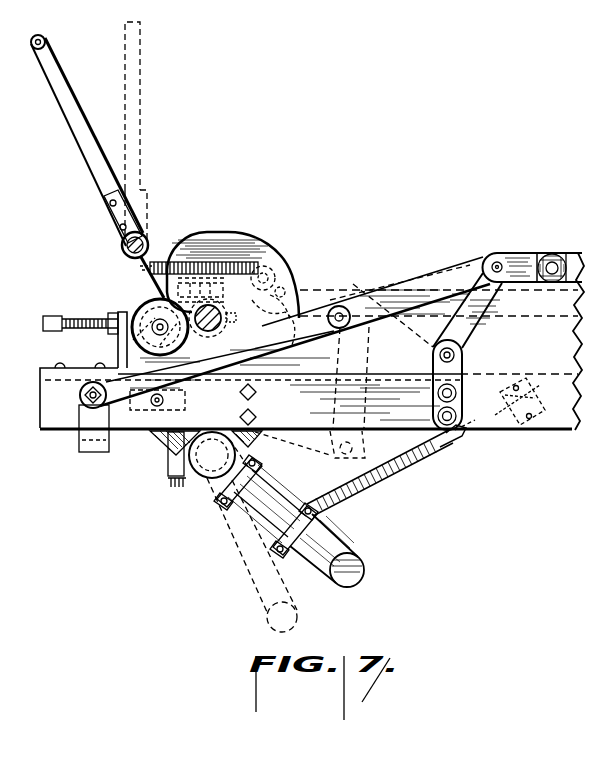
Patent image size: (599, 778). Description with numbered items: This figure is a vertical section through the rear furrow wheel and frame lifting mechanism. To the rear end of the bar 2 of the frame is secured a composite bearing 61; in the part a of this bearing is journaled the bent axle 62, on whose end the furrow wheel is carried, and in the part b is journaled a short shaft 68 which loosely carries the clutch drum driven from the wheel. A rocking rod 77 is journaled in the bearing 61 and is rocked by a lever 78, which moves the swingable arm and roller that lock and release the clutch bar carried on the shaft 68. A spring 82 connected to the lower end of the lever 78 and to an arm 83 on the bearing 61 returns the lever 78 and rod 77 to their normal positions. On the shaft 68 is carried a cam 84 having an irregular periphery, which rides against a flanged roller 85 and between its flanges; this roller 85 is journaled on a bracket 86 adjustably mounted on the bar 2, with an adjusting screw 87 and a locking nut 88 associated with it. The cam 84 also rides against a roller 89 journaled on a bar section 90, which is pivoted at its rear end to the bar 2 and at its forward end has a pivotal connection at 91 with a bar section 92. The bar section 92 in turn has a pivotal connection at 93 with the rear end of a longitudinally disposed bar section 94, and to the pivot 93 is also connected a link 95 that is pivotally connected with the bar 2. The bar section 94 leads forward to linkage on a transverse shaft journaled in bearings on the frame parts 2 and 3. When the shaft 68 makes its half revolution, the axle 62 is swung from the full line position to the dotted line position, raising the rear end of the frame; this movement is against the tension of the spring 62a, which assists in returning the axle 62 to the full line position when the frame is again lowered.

The lever 78 is at (50, 63).
The rocking rod 77 is at (121, 242).
The part b of the bearing b is at (154, 244).
The short shaft 68 is at (212, 303).
The spring 82 is at (185, 265).
The arm 83 is at (267, 277).
The cam 84 is at (283, 291).
The roller 85 is at (146, 306).
The adjusting screw 87 is at (56, 332).
The locking nut 88 is at (114, 334).
The bar of the frame 2 is at (62, 418).
The bracket 86 is at (147, 411).
The composite bearing 61 is at (175, 436).
The bar section 90 is at (295, 345).
The roller 89 is at (260, 386).
The pivotal connection 91 is at (343, 311).
The bar section 92 is at (420, 273).
The pivotal connection 93 is at (500, 262).
The bar section 94 is at (562, 257).
The link 95 is at (477, 351).
The frame part 3 is at (562, 349).
The part a of the bearing a is at (183, 458).
The bent axle 62 is at (338, 528).
The spring 62a is at (405, 482).